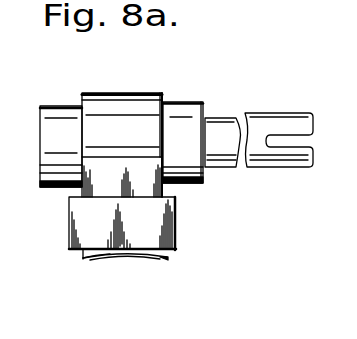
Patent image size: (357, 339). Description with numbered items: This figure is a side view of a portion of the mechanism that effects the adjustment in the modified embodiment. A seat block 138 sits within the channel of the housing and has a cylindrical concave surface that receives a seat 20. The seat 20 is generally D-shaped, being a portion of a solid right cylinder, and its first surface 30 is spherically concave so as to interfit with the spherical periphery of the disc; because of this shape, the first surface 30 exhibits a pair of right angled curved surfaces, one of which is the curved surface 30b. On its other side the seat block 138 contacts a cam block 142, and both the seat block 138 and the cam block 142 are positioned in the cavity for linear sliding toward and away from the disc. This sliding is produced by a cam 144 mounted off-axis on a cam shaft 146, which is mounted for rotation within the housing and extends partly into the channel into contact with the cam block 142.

The cam 144 is at (160, 93).
The cam shaft 146 is at (192, 113).
The cam block 142 is at (167, 188).
The seat block 138 is at (163, 217).
The seat 20 is at (163, 257).
The first surface 30 is at (108, 260).
The right angled curved surface 30b is at (137, 258).